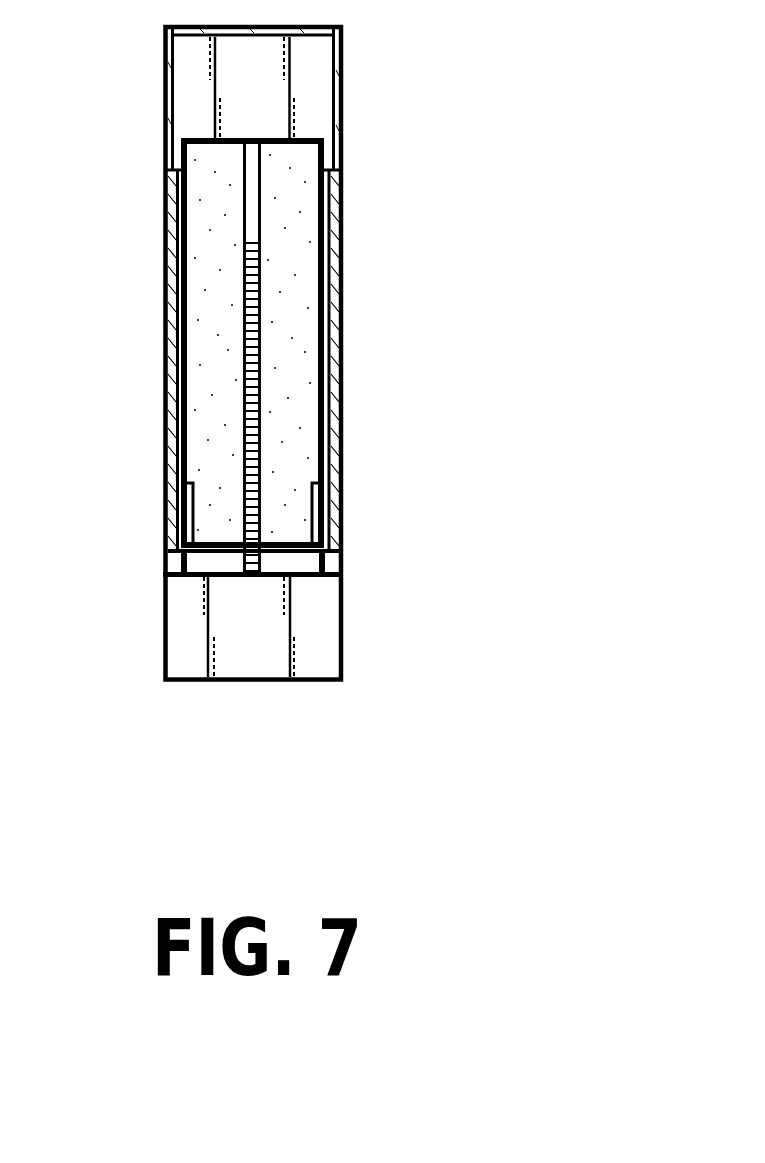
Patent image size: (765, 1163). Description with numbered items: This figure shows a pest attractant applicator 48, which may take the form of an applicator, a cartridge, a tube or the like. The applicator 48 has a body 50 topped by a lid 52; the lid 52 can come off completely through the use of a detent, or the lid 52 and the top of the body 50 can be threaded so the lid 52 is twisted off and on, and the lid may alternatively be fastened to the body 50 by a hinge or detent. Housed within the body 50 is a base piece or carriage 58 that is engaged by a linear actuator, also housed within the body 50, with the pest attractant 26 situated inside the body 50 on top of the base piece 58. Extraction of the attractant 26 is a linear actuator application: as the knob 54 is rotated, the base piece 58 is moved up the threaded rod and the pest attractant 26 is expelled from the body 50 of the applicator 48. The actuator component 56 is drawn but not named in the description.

The pest attractant applicator 48 is at (333, 353).
The body 50 is at (342, 443).
The lid 52 is at (163, 93).
The knob 54 is at (163, 647).
The pest attractant 26 is at (210, 375).
The spring 56 is at (260, 303).
The base piece or carriage 58 is at (292, 557).